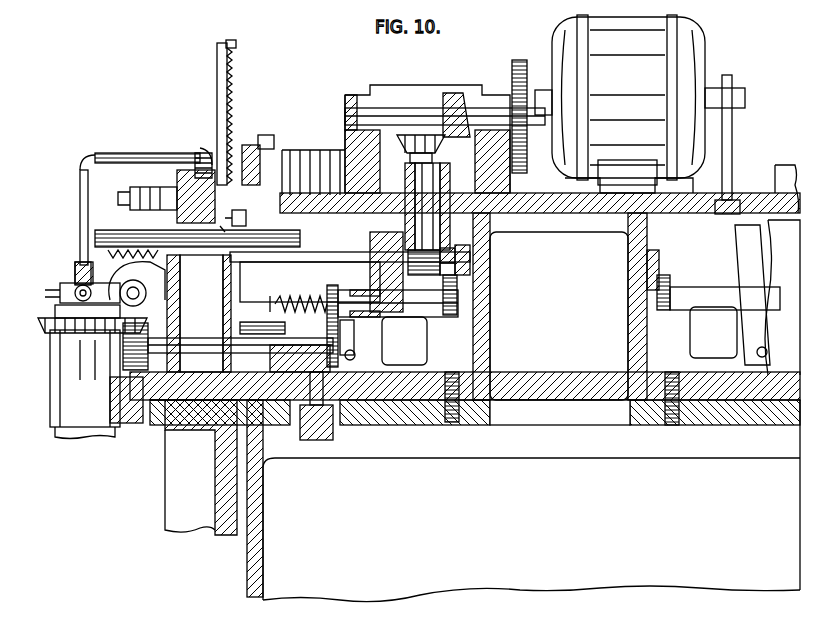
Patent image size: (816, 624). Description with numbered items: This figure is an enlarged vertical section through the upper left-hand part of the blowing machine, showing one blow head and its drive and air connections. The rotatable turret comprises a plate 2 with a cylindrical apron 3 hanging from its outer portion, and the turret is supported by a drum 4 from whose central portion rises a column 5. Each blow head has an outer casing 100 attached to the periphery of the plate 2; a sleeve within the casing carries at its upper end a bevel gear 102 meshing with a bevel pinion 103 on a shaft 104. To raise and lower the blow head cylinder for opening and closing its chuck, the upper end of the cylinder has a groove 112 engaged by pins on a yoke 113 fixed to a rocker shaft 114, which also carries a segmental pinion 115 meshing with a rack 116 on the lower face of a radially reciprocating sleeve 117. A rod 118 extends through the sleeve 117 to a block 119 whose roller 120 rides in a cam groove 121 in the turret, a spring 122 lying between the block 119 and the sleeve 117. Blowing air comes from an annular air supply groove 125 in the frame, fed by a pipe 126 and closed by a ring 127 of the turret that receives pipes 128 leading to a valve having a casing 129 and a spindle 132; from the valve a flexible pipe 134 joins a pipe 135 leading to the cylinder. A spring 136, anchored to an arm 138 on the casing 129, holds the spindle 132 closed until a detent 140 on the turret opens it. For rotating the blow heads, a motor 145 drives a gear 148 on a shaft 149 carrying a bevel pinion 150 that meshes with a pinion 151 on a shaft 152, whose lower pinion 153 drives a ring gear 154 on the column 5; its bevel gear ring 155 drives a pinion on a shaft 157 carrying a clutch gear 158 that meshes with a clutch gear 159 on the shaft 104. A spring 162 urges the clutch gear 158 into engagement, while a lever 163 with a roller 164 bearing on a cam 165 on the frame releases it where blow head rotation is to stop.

The turret plate 2 is at (430, 400).
The cylindrical apron 3 is at (240, 520).
The drum 4 is at (282, 512).
The column 5 is at (625, 245).
The outer casing 100 is at (55, 385).
The bevel gear 102 is at (48, 325).
The bevel pinion 103 is at (120, 360).
The shaft 104 is at (185, 425).
The groove 112 is at (70, 292).
The yoke 113 is at (75, 278).
The rocker shaft 114 is at (146, 293).
The segmental pinion 115 is at (158, 272).
The rack 116 is at (108, 253).
The sleeve 117 is at (120, 228).
The rod 118 is at (128, 228).
The block 119 is at (282, 150).
The roller 120 is at (300, 150).
The cam groove 121 is at (330, 150).
The spring 122 is at (240, 226).
The annular air supply groove 125 is at (737, 200).
The pipe 126 is at (732, 125).
The ring 127 is at (760, 213).
The pipe 128 is at (285, 262).
The valve casing 129 is at (200, 152).
The valve spindle 132 is at (185, 170).
The flexible pipe 134 is at (105, 155).
The pipe 135 is at (80, 195).
The spring 136 is at (232, 70).
The arm 138 is at (217, 85).
The detent 140 is at (250, 145).
The motor 145 is at (705, 45).
The gear 148 is at (519, 60).
The shaft 149 is at (492, 108).
The bevel pinion 150 is at (452, 95).
The bevel pinion 151 is at (405, 135).
The shaft 152 is at (440, 255).
The pinion 153 is at (455, 268).
The ring gear 154 is at (455, 256).
The bevel gear ring 155 is at (470, 265).
The shaft 157 is at (405, 341).
The clutch gear 158 is at (325, 288).
The clutch gear 159 is at (340, 425).
The spring 162 is at (272, 318).
The lever 163 is at (356, 335).
The roller 164 is at (340, 285).
The cam 165 is at (390, 300).